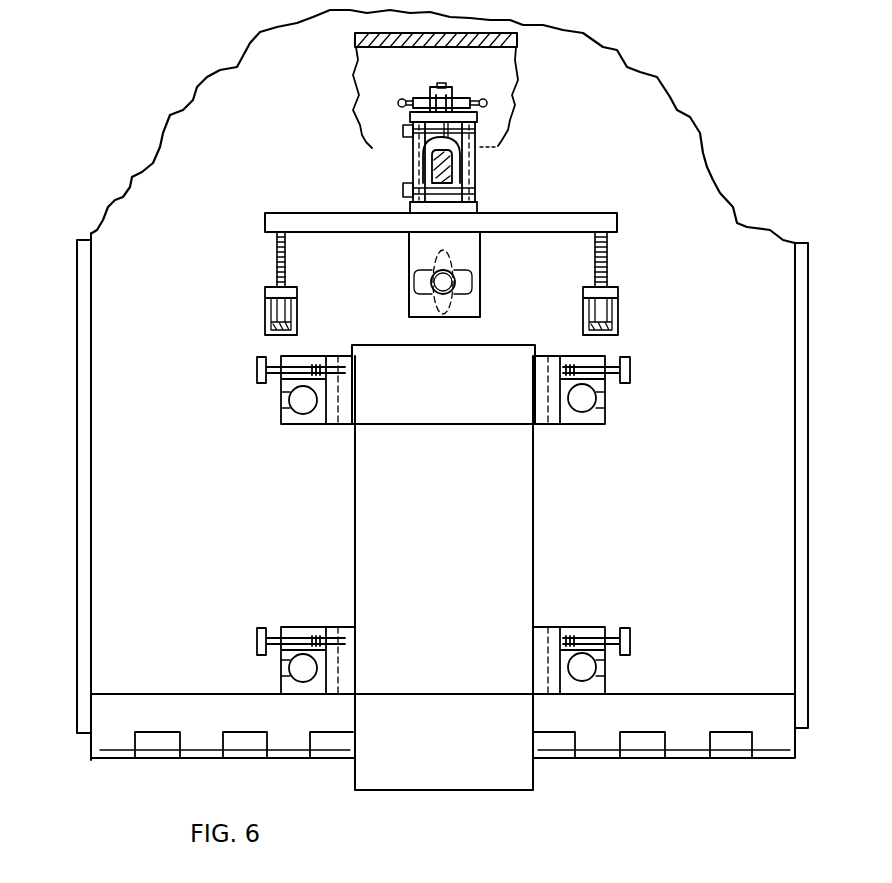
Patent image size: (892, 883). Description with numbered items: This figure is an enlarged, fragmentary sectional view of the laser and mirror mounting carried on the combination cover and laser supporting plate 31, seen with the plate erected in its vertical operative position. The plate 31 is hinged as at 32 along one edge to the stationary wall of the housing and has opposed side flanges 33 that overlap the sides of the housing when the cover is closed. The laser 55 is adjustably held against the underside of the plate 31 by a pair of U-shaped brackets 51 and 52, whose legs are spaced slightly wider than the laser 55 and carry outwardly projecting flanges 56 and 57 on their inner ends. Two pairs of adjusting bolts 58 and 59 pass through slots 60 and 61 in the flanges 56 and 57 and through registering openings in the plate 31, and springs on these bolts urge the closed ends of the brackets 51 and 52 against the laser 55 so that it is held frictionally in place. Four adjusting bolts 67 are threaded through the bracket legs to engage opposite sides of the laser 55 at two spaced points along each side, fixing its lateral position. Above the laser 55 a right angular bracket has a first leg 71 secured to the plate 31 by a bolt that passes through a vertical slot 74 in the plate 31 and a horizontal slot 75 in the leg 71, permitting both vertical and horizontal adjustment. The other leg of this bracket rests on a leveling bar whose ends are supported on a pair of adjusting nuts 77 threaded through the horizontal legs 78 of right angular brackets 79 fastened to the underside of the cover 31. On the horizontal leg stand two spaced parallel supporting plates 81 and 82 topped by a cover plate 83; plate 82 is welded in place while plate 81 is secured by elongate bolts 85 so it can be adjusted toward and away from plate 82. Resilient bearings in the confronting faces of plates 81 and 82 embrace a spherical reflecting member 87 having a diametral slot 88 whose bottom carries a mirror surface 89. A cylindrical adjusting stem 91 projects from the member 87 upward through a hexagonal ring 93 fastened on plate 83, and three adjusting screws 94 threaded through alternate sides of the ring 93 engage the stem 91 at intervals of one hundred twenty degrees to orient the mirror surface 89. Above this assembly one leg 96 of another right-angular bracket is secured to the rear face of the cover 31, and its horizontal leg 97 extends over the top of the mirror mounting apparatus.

The combination cover and laser supporting plate 31 is at (733, 220).
The hinge 32 is at (633, 752).
The side flanges 33 is at (77, 325).
The U-shaped bracket 51 is at (445, 424).
The U-shaped bracket 52 is at (440, 632).
The laser 55 is at (533, 520).
The outwardly projecting flanges 56 is at (605, 395).
The outwardly projecting flanges 57 is at (300, 627).
The adjusting bolts 58 is at (592, 404).
The adjusting bolts 59 is at (312, 656).
The slots 60 is at (281, 400).
The slots 61 is at (289, 668).
The adjusting bolts 67 is at (257, 368).
The first leg of right angular bracket 71 is at (409, 297).
The vertical slot 74 is at (433, 258).
The horizontal slot 75 is at (472, 282).
The adjusting nuts 77 is at (277, 252).
The horizontally disposed legs 78 is at (265, 293).
The right angular brackets 79 is at (291, 316).
The supporting plate 81 is at (418, 150).
The supporting plate 82 is at (470, 180).
The cover plate 83 is at (478, 118).
The elongate bolts 85 is at (403, 190).
The spherically shaped reflecting member 87 is at (460, 155).
The diametral slot 88 is at (443, 183).
The mirror surface 89 is at (452, 168).
The adjusting stem 91 is at (446, 86).
The hexagonally-shaped plate or ring 93 is at (432, 95).
The adjusting screws 94 is at (398, 103).
The leg of right-angular bracket 96 is at (355, 73).
The horizontally disposed leg 97 is at (518, 46).